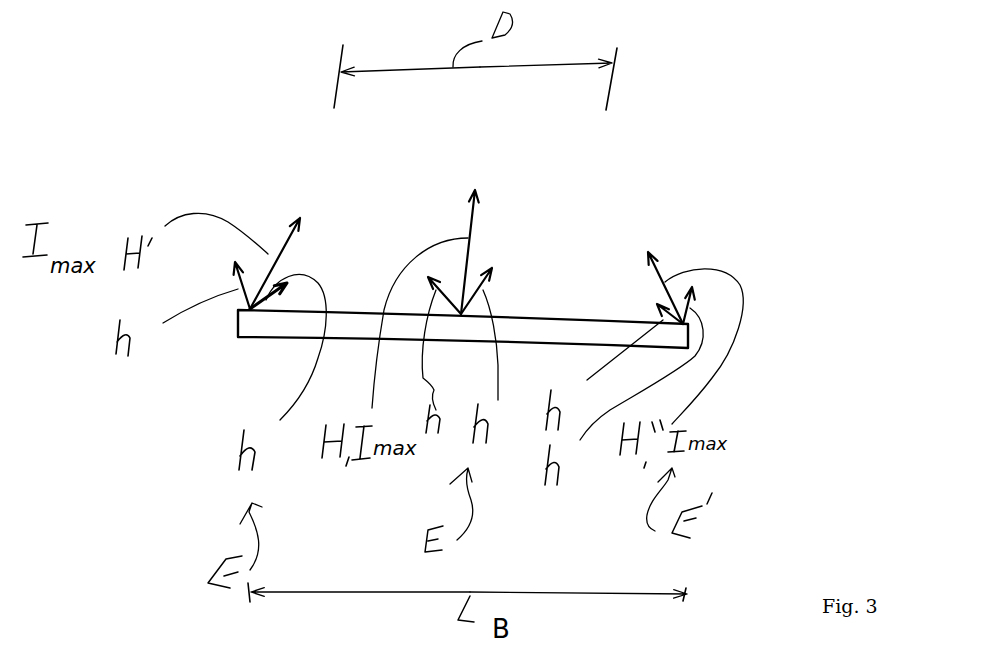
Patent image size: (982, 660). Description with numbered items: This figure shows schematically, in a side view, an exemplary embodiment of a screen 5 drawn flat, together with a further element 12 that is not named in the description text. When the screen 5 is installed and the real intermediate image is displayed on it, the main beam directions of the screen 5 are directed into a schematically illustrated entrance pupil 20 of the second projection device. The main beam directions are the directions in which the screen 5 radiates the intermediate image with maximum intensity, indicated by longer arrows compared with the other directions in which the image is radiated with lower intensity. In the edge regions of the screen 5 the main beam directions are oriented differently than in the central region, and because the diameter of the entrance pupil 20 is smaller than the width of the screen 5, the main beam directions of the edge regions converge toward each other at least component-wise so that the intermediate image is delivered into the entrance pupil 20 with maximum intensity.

The antenna radiating element 12 is at (643, 168).
The entrance pupil 20 is at (336, 158).
The screen 5 is at (295, 343).